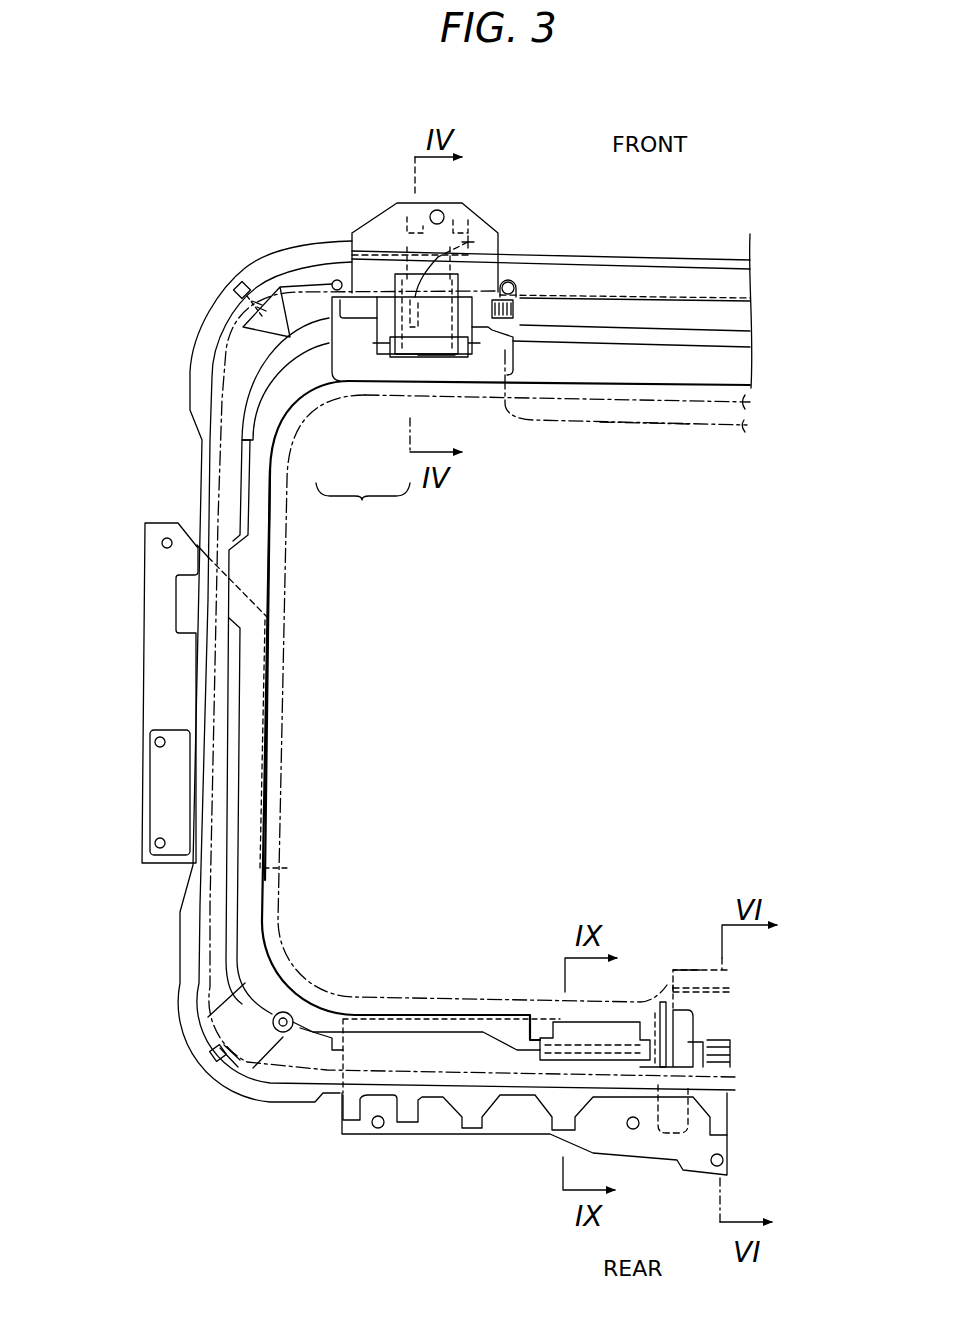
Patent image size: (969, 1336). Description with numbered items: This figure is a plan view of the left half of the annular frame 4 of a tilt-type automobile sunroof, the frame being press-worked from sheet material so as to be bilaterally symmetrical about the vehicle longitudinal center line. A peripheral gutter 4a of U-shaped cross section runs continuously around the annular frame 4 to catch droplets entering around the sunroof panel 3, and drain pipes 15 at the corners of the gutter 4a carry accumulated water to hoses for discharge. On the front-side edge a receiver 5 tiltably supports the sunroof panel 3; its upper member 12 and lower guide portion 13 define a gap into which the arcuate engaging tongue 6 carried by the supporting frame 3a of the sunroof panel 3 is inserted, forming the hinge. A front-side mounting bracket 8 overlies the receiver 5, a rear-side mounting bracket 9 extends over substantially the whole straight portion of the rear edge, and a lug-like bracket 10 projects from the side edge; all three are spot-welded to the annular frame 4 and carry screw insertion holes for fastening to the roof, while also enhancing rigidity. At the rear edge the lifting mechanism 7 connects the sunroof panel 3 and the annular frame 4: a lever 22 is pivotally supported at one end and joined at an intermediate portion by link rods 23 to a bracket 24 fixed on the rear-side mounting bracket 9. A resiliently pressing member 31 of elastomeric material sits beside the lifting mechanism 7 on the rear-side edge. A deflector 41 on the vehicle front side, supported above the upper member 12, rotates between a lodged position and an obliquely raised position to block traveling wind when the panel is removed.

The sunroof panel 3 is at (208, 932).
The supporting frame 3a is at (285, 847).
The annular frame 4 is at (706, 263).
The peripheral gutter 4a is at (218, 488).
The receiver 5 is at (363, 507).
The engaging tongue 6 is at (470, 240).
The lifting mechanism 7 is at (666, 928).
The front-side mounting bracket 8 is at (380, 214).
The rear-side mounting bracket 9 is at (513, 1134).
The lug-like bracket 10 is at (143, 677).
The upper member 12 is at (377, 342).
The lower guide portion 13 is at (432, 358).
The drain pipe 15 is at (237, 288).
The lever 22 is at (698, 968).
The link rod 23 is at (672, 985).
The bracket 24 is at (659, 1005).
The resiliently pressing member 31 is at (555, 1036).
The deflector 41 is at (630, 424).